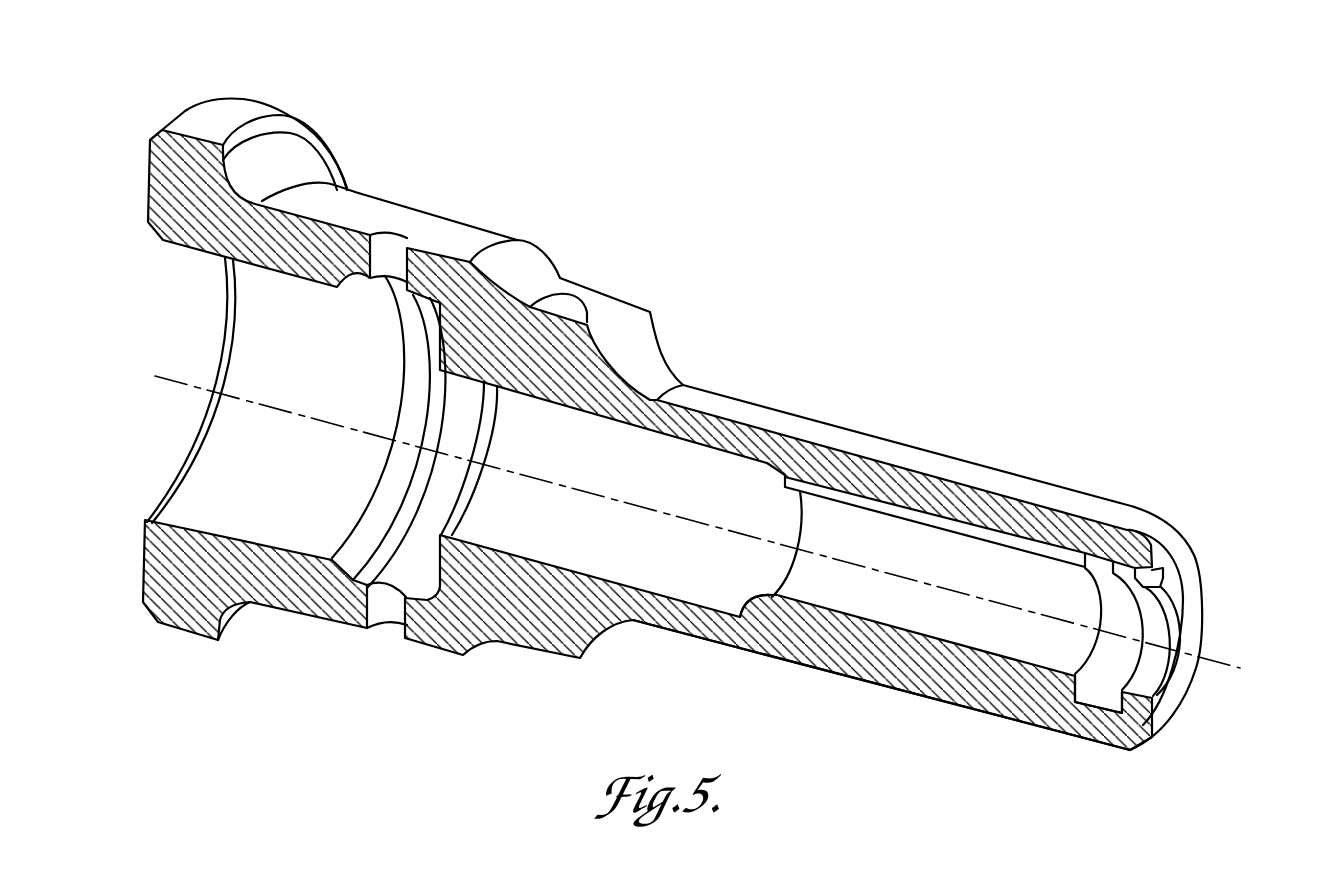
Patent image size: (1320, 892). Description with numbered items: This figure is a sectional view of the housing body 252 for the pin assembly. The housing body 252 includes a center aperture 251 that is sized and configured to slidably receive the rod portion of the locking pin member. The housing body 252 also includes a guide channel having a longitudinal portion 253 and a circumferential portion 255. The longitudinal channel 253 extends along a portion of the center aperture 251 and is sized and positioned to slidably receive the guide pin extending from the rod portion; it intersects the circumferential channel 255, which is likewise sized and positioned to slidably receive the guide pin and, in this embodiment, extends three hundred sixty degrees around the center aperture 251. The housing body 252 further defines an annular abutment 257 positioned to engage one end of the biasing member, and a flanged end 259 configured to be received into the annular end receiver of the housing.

The center aperture 251 is at (1073, 603).
The housing body 252 is at (807, 263).
The longitudinal portion 253 is at (957, 530).
The circumferential portion 255 is at (1106, 694).
The annular abutment 257 is at (770, 597).
The flanged end 259 is at (242, 113).